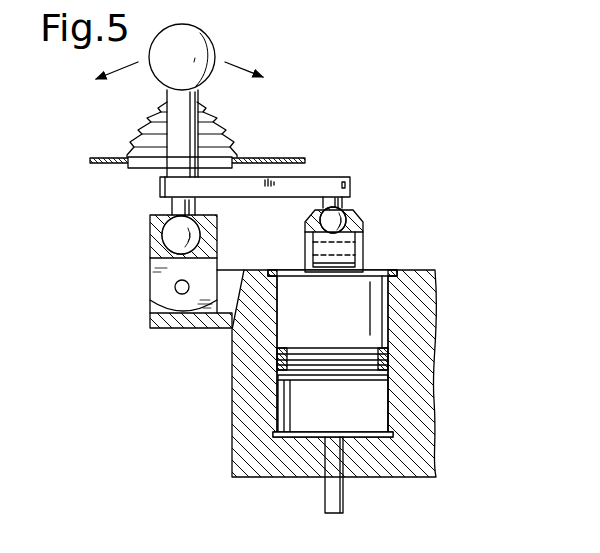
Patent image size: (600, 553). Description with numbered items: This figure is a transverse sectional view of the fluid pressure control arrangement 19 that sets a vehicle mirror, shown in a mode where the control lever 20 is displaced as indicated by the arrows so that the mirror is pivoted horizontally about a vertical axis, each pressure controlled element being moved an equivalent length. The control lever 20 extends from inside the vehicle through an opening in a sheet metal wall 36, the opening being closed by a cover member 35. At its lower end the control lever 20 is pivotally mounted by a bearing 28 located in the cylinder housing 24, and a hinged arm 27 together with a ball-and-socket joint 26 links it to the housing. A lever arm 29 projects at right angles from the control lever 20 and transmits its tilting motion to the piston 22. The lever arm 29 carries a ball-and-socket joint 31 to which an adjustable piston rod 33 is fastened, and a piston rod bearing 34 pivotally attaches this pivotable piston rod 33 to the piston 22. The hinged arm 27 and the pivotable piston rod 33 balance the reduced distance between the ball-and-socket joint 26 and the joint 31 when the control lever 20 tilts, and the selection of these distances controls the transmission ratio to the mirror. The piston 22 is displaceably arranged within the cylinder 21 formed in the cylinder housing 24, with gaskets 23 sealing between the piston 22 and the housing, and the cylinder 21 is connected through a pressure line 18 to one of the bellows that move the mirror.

The pressure line 18 is at (343, 495).
The fluid pressure control arrangement 19 is at (295, 198).
The control lever 20 is at (200, 44).
The cylinder 21 is at (377, 410).
The piston 22 is at (375, 313).
The gasket 23 is at (292, 360).
The cylinder housing 24 is at (242, 367).
The ball-and-socket joint 26 is at (172, 232).
The hinged arm 27 is at (217, 240).
The bearing 28 is at (175, 287).
The lever arm 29 is at (323, 182).
The ball-and-socket joint 31 is at (318, 217).
The piston rod 33 is at (365, 227).
The piston rod bearing 34 is at (357, 249).
The cover member 35 is at (213, 127).
The sheet metal wall 36 is at (277, 157).